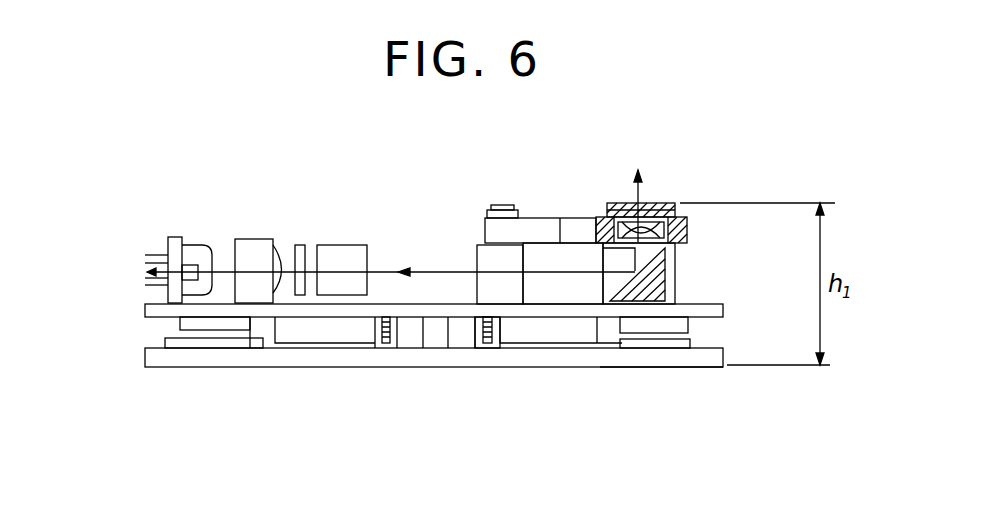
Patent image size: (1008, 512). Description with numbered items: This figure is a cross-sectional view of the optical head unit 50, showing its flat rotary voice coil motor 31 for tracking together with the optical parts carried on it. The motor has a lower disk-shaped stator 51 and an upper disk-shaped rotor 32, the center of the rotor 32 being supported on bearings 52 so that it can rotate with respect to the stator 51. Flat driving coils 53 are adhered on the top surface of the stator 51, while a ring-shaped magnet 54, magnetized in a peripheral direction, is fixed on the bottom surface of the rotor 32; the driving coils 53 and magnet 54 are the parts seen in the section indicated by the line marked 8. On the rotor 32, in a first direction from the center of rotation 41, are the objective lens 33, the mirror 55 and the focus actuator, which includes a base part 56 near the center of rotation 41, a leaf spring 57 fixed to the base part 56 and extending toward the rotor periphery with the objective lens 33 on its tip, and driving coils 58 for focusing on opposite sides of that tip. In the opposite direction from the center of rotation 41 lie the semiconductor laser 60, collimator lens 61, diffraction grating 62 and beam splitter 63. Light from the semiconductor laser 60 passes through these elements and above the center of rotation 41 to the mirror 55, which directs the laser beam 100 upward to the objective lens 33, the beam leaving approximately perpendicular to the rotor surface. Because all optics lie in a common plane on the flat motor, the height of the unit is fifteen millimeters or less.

The rotary voice coil motor 31 is at (730, 374).
The rotor 32 is at (715, 297).
The objective lens 33 is at (657, 203).
The center of rotation 41 is at (437, 304).
The optical head unit 50 is at (580, 122).
The stator 51 is at (700, 368).
The bearings 52 is at (496, 347).
The driving coils 53 is at (655, 349).
The ring-shaped magnet 54 is at (637, 333).
The mirror 55 is at (678, 259).
The base part 56 is at (476, 262).
The leaf spring 57 is at (570, 218).
The driving coils for focusing 58 is at (668, 203).
The semiconductor laser 60 is at (197, 245).
The collimator lens 61 is at (253, 239).
The diffraction grating 62 is at (303, 245).
The beam splitter 63 is at (348, 245).
The laser beam 100 is at (642, 167).
The section line for FIG. 8 is at (105, 333).